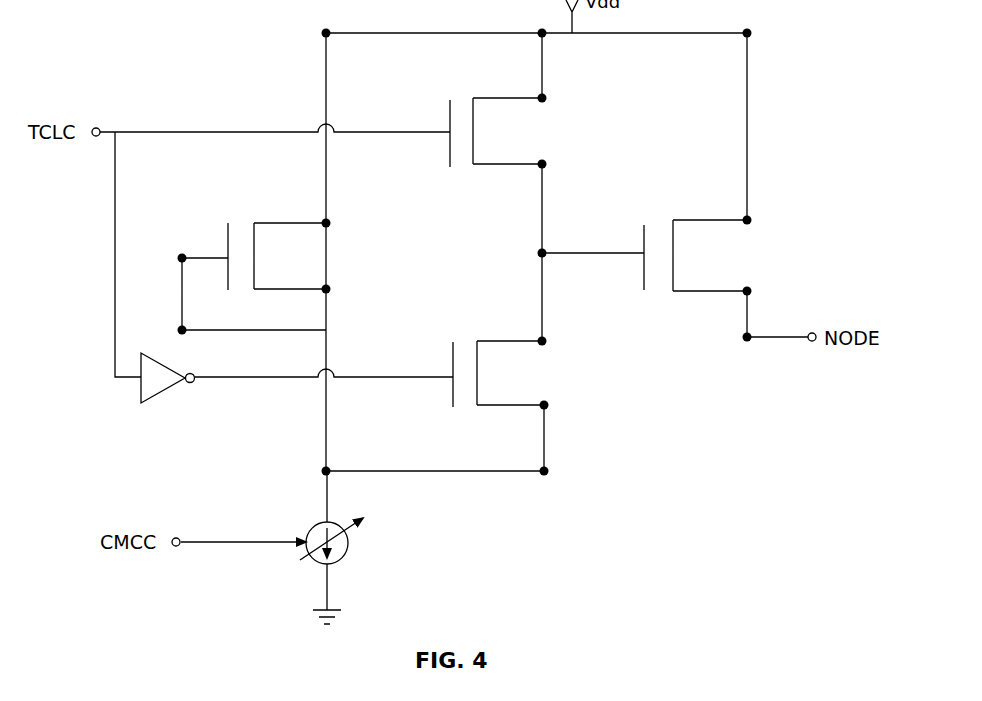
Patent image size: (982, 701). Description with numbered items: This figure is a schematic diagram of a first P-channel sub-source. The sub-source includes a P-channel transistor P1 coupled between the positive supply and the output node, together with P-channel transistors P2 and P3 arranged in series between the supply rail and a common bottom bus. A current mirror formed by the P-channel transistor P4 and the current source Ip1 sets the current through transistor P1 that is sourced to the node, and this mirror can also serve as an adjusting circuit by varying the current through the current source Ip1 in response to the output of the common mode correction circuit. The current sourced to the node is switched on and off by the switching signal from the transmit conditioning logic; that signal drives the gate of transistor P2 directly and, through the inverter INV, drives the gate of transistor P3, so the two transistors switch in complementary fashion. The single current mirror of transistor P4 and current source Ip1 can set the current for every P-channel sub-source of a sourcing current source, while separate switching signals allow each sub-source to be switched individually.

The P-channel transistor P1 is at (664, 256).
The P-channel transistor P2 is at (516, 131).
The P-channel transistor P3 is at (518, 404).
The P-channel transistor P4 is at (271, 277).
The inverter INV is at (160, 395).
The current source Ip1 is at (346, 547).